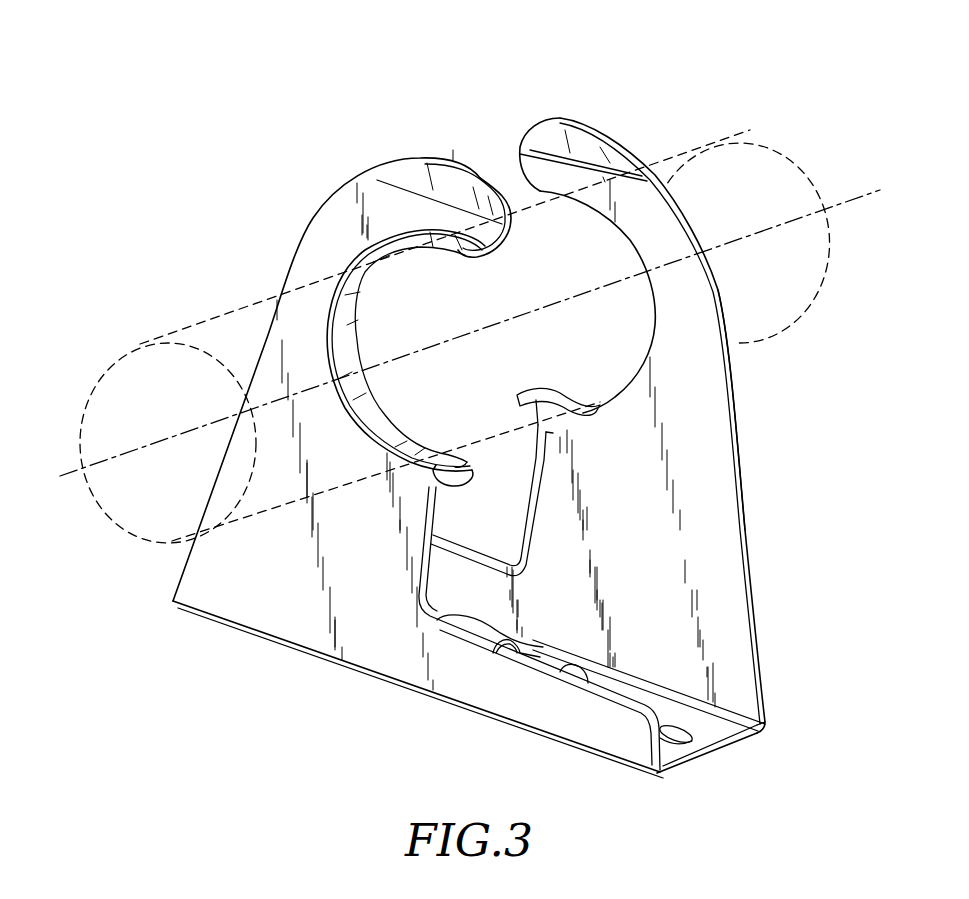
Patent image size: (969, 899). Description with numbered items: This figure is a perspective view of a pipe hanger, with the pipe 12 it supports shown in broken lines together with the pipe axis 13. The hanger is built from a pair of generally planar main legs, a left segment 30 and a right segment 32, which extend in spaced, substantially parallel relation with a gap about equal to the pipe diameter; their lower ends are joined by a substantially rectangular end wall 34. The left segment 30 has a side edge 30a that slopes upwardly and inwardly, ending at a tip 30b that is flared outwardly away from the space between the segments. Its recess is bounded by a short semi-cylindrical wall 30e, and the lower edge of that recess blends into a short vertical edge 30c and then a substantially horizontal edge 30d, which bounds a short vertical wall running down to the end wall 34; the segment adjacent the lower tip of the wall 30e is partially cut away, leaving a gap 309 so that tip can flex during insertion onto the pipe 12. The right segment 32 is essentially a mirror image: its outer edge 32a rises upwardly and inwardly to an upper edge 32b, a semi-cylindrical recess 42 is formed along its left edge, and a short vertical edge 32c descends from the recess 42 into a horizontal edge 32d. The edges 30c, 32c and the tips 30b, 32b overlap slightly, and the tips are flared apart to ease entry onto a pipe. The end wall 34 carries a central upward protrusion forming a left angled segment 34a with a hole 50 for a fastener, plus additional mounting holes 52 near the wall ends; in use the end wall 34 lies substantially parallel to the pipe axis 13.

The pipe 12 is at (753, 144).
The pipe axis 13 is at (70, 473).
The left segment 30 is at (213, 272).
The side edge 30a is at (313, 218).
The tip 30b is at (457, 160).
The short vertical edge 30c is at (428, 512).
The substantially horizontal edge 30d is at (588, 683).
The semi-cylindrical wall 30e is at (440, 228).
The right segment 32 is at (757, 437).
The outer edge 32a is at (727, 513).
The upper edge 32b is at (528, 140).
The short vertical edge 32c is at (533, 500).
The horizontal edge 32d is at (480, 556).
The end wall 34 is at (683, 750).
The left angled segment 34a is at (475, 632).
The recess 42 is at (655, 323).
The hole 50 is at (543, 647).
The mounting holes 52 is at (747, 743).
The gap 309 is at (450, 481).